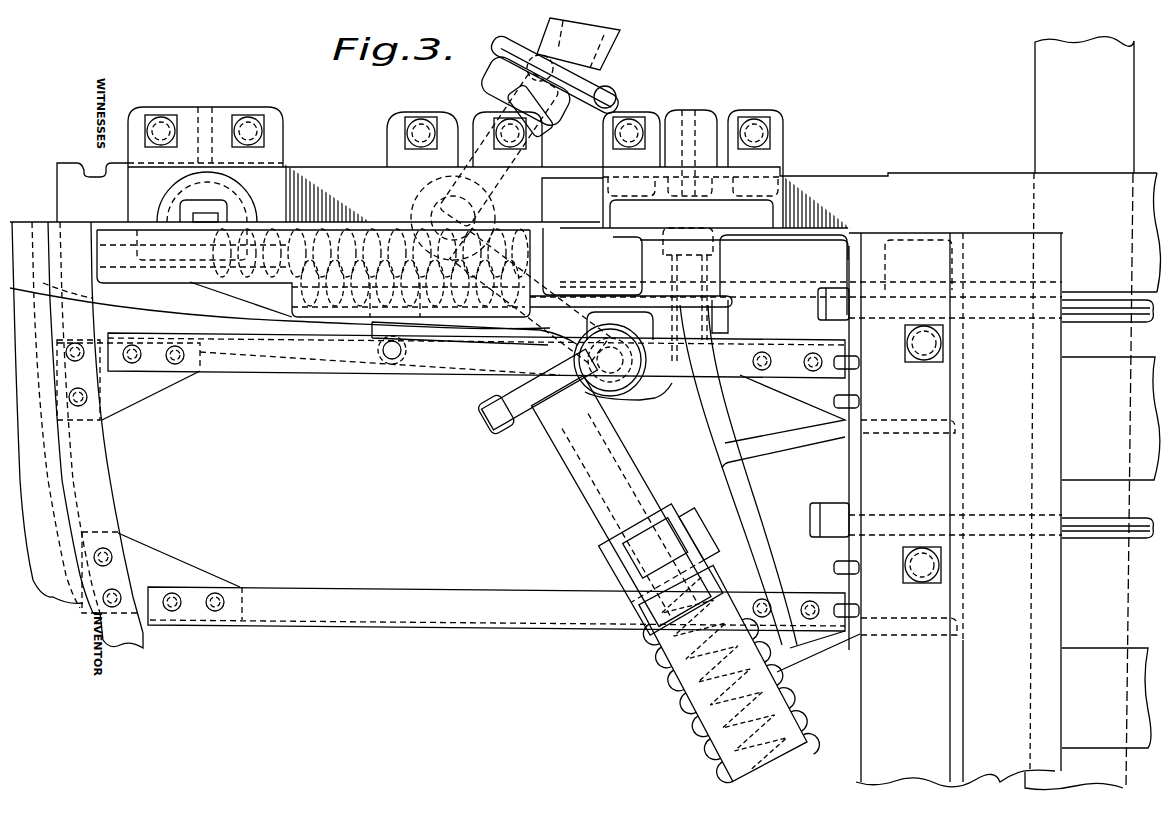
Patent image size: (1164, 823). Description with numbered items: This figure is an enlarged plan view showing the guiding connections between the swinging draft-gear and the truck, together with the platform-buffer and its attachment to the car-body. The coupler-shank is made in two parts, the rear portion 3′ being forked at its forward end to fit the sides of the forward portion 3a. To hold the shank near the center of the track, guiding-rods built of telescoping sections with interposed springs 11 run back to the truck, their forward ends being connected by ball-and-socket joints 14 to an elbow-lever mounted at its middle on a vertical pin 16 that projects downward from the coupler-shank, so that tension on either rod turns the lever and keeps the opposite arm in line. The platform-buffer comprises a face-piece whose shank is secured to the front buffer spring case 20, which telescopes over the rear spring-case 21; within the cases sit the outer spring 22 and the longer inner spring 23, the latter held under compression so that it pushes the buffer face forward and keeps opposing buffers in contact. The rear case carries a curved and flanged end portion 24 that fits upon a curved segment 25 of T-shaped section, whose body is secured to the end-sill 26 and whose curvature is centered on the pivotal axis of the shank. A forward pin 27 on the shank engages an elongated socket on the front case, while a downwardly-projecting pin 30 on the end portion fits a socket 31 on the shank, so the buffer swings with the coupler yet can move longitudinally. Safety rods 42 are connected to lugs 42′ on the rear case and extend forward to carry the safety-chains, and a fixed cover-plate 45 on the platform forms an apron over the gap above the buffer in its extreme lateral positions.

The forward portion of the coupler-shank 3a is at (583, 167).
The rear portion of the coupler-shank 3′ is at (1093, 413).
The interposed springs 11 is at (795, 730).
The ball-and-socket joints 14 is at (586, 80).
The vertical pin 16 is at (490, 222).
The front buffer spring case 20 is at (286, 277).
The rear spring-case 21 is at (592, 261).
The outer buffer spring 22 is at (313, 273).
The inner buffer spring 23 is at (243, 268).
The curved and flanged end portion 24 is at (719, 261).
The curved segment 25 is at (762, 475).
The end-sill 26 is at (936, 510).
The forward pin 27 is at (220, 212).
The downwardly-projecting pin 30 is at (683, 246).
The socket 31 is at (722, 242).
The rods 42 is at (155, 323).
The lugs 42′ is at (657, 395).
The cover-plate 45 is at (47, 493).